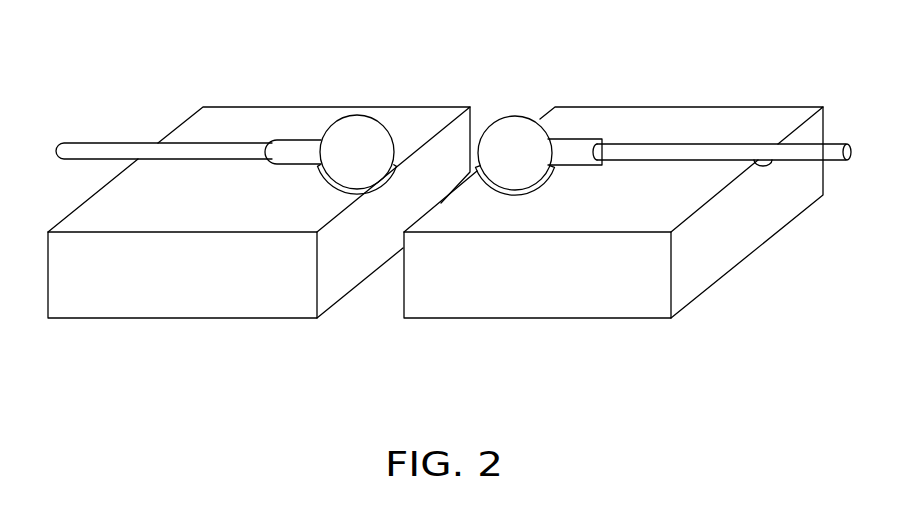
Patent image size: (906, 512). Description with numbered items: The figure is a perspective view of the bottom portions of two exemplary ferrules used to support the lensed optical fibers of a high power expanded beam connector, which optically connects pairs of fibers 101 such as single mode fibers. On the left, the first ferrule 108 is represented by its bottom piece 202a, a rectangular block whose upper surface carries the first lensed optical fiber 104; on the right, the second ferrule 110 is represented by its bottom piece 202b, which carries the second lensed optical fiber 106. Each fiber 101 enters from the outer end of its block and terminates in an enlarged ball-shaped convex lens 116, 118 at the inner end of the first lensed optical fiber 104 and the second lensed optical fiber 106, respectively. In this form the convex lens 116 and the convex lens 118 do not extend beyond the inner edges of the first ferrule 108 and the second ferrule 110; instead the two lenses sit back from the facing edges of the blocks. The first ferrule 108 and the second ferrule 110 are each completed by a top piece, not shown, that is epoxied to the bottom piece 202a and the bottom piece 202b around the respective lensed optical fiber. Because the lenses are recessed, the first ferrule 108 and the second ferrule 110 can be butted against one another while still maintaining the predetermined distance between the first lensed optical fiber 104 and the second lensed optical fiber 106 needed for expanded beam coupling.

The fibers 101 is at (130, 139).
The first lensed optical fiber 104 is at (336, 136).
The second lensed optical fiber 106 is at (539, 136).
The first ferrule 108 is at (259, 195).
The second ferrule 110 is at (613, 195).
The convex lens 116 is at (370, 162).
The convex lens 118 is at (530, 162).
The bottom piece 202a is at (263, 210).
The bottom piece 202b is at (650, 210).